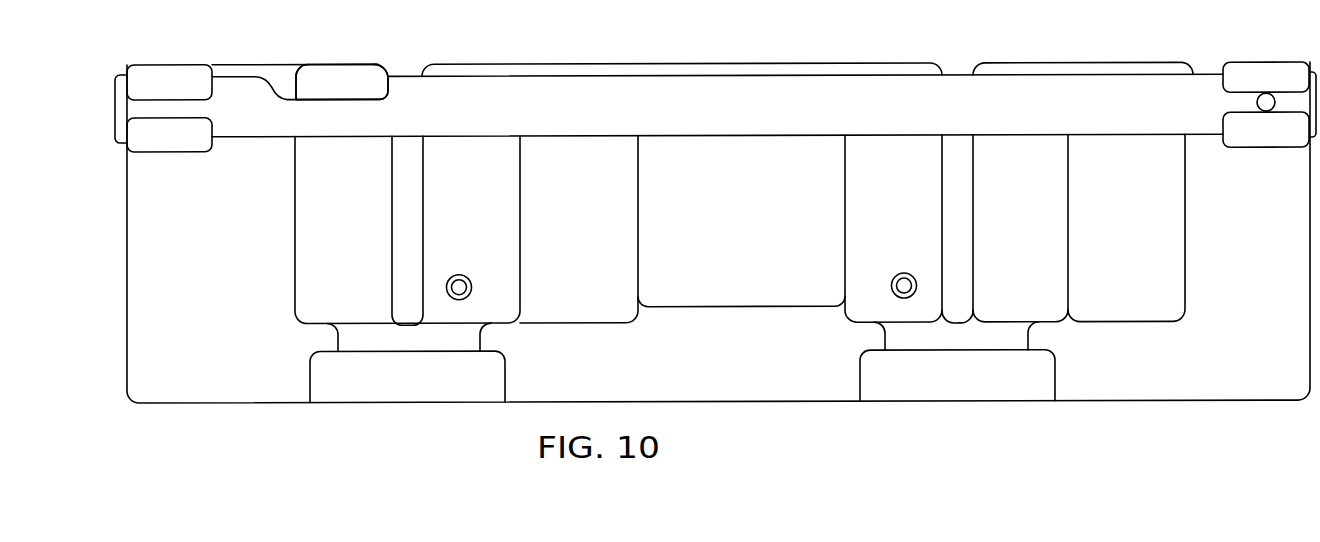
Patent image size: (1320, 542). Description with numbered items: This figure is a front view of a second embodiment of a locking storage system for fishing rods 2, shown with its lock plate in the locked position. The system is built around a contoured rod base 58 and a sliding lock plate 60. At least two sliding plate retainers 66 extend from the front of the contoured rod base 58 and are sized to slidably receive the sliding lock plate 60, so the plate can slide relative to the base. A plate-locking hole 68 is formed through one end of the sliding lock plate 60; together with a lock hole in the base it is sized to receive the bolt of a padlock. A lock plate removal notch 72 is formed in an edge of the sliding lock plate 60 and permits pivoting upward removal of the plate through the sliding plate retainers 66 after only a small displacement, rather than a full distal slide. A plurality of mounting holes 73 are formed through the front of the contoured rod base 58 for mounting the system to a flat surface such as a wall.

The locking storage system for fishing rods 2 is at (715, 237).
The contoured rod base 58 is at (740, 388).
The sliding lock plate 60 is at (610, 84).
The sliding plate retainers 66 is at (172, 76).
The plate-locking hole 68 is at (1265, 98).
The lock plate removal notch 72 is at (333, 80).
The mounting holes 73 is at (460, 275).